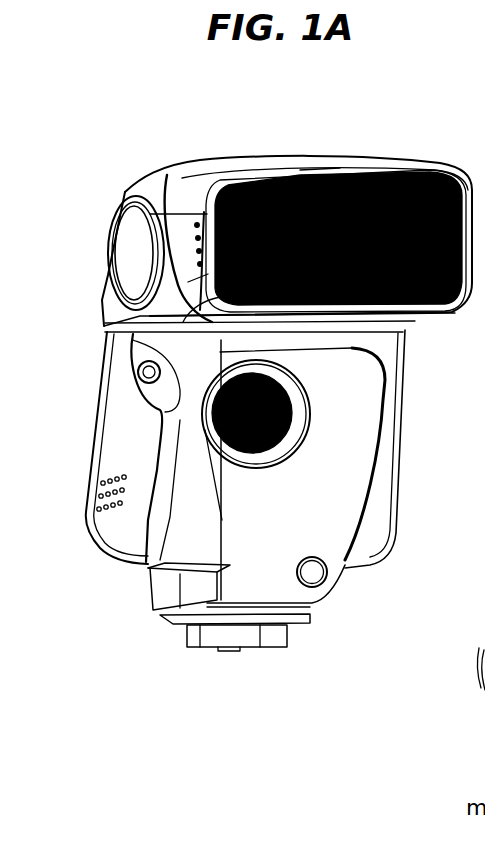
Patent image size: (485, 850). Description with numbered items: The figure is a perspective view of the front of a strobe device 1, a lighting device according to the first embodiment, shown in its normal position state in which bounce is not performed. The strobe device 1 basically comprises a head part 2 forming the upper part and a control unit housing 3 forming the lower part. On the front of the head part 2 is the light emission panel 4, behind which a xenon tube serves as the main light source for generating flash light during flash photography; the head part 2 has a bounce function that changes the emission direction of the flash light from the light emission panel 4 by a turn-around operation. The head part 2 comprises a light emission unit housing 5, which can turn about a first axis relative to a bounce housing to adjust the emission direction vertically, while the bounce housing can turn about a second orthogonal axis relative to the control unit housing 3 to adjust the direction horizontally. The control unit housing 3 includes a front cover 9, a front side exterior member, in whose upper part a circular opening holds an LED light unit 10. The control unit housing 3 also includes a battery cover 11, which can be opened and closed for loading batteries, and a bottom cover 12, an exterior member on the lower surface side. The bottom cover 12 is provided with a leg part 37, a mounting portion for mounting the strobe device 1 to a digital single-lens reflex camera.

The strobe device 1 is at (259, 131).
The head part 2 is at (57, 163).
The control unit housing 3 is at (57, 327).
The light emission panel 4 is at (418, 200).
The light emission unit housing 5 is at (303, 172).
The front cover 9 is at (288, 520).
The LED light unit 10 is at (275, 402).
The battery cover 11 is at (108, 520).
The bottom cover 12 is at (172, 582).
The leg part 37 is at (258, 623).